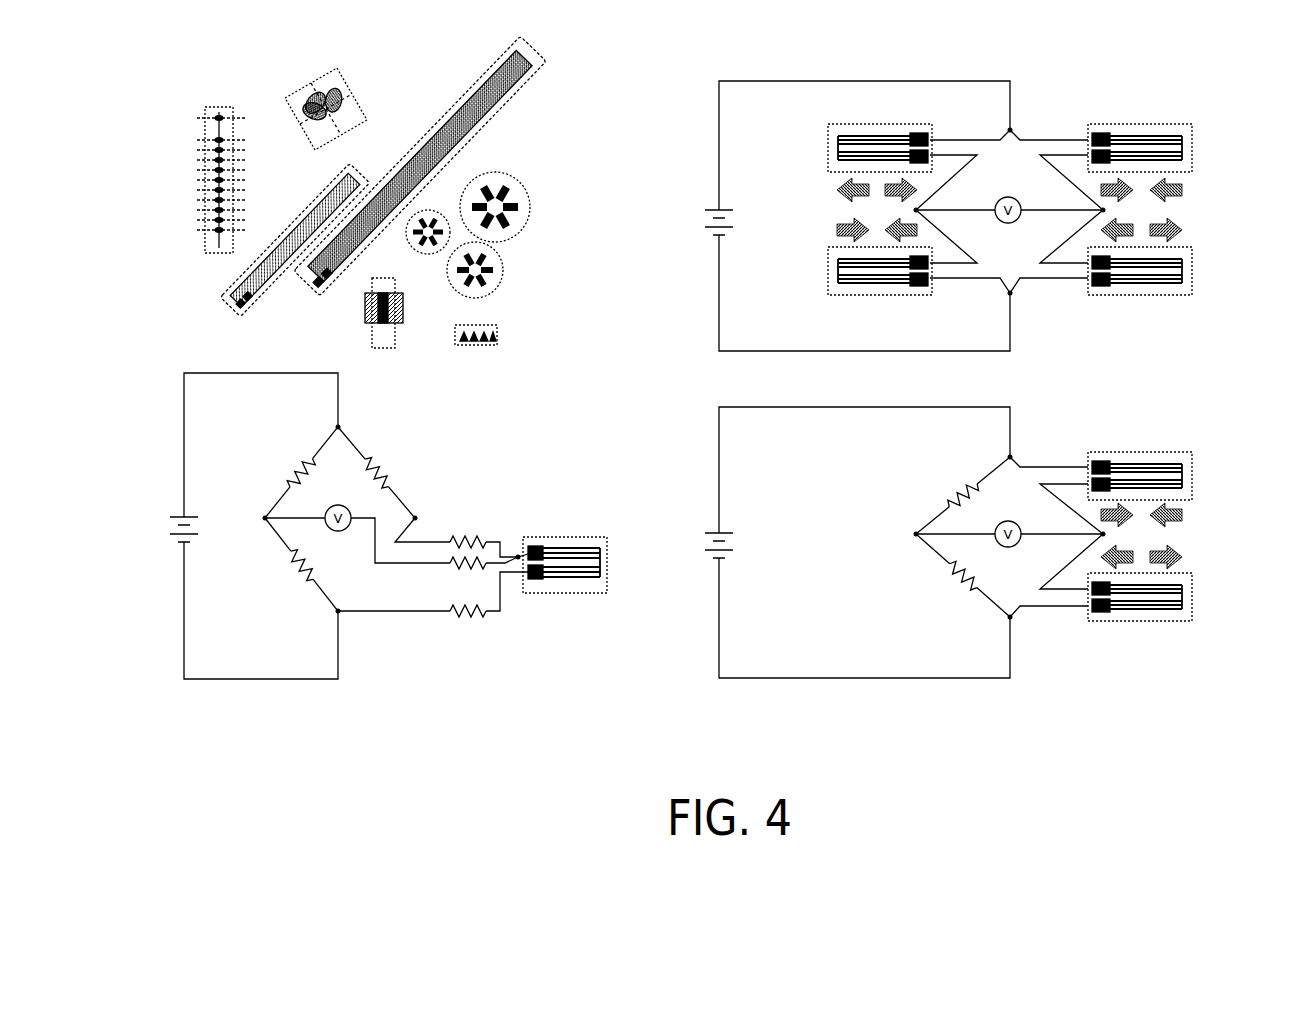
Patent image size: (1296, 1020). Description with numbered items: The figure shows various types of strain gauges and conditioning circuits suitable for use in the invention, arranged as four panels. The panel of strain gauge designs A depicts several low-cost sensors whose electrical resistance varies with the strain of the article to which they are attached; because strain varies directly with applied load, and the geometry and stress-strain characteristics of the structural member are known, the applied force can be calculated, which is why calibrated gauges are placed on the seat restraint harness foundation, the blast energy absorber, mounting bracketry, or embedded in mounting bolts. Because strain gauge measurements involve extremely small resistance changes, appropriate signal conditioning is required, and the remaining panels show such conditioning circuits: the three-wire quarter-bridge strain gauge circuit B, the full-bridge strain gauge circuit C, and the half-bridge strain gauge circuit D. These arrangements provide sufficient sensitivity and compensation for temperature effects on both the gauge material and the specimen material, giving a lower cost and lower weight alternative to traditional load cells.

The strain gauge designs A is at (376, 192).
The three-wire quarter-bridge strain gauge circuit B is at (388, 538).
The full-bridge strain gauge circuit C is at (997, 198).
The half-bridge strain gauge circuit D is at (998, 538).